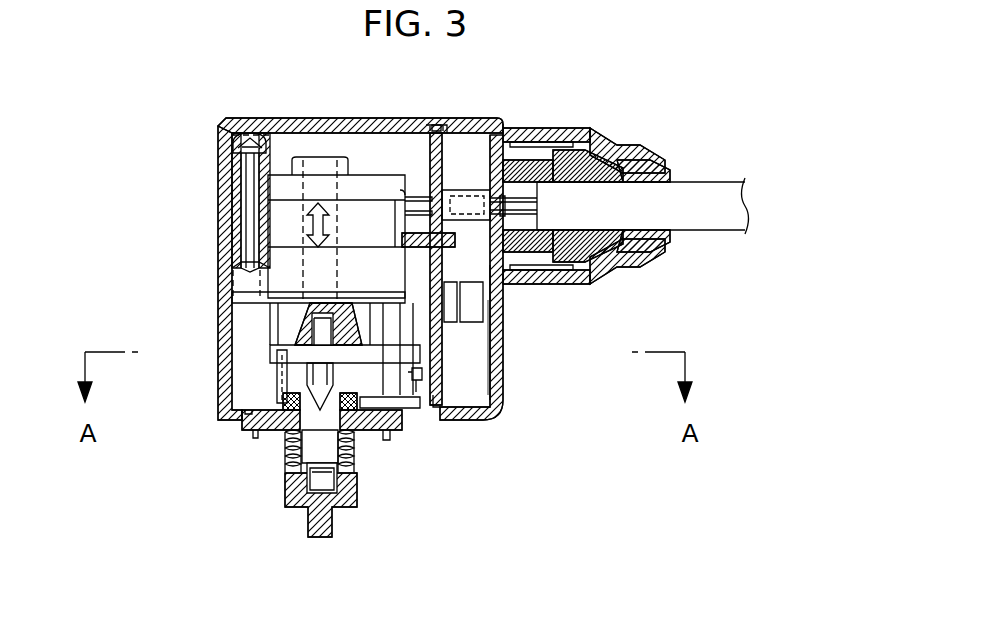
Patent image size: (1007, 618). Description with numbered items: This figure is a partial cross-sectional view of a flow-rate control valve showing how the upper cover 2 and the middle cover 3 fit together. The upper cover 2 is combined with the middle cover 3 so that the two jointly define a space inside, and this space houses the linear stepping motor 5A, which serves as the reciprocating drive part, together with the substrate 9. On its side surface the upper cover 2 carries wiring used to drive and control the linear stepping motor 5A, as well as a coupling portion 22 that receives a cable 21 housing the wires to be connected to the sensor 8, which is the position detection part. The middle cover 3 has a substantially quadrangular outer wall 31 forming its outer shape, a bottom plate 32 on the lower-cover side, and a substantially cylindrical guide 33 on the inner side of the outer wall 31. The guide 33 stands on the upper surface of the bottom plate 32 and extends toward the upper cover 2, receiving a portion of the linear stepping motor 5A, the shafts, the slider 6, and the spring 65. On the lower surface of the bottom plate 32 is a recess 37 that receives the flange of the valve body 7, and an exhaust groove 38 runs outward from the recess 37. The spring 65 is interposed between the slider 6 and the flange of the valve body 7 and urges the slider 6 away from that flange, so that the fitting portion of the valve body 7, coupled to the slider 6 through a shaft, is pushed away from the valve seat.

The upper cover 2 is at (216, 124).
The middle cover 3 is at (516, 337).
The linear stepping motor 5A is at (355, 175).
The slider 6 is at (262, 342).
The valve body 7 is at (292, 532).
The sensor 8 is at (420, 372).
The substrate 9 is at (443, 145).
The cable 21 is at (710, 180).
The coupling portion 22 is at (548, 130).
The outer wall 31 is at (503, 372).
The bottom plate 32 is at (450, 428).
The guide 33 is at (263, 325).
The recess 37 is at (260, 440).
The exhaust groove 38 is at (405, 428).
The spring 65 is at (252, 390).